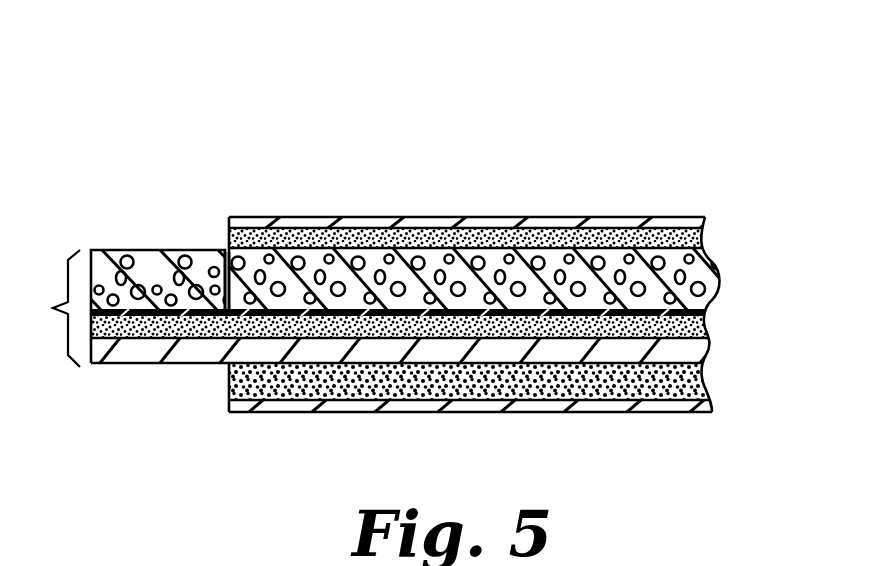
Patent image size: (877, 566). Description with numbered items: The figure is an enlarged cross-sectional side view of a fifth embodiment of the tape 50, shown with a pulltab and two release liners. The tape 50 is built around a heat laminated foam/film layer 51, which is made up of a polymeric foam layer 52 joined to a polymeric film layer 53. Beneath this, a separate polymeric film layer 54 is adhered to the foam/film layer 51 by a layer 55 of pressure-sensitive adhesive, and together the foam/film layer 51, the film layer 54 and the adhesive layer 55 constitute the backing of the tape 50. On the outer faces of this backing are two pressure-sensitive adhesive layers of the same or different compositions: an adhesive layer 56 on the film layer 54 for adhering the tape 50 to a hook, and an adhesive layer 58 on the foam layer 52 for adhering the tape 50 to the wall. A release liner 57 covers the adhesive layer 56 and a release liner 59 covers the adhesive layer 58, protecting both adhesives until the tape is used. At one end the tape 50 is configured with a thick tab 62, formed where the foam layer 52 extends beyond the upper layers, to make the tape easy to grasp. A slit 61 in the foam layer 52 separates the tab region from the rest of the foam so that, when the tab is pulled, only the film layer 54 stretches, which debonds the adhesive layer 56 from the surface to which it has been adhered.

The tape 50 is at (727, 93).
The heat laminated foam/film layer 51 is at (720, 248).
The polymeric foam layer 52 is at (128, 262).
The polymeric film layer 53 is at (150, 312).
The polymeric film layer 54 is at (712, 350).
The layer of pressure-sensitive adhesive 55 is at (705, 325).
The pressure-sensitive adhesive layer 56 is at (230, 380).
The release liner 57 is at (392, 403).
The pressure-sensitive adhesive layer 58 is at (702, 238).
The release liner 59 is at (660, 232).
The slit 61 is at (212, 266).
The thick tab 62 is at (42, 308).